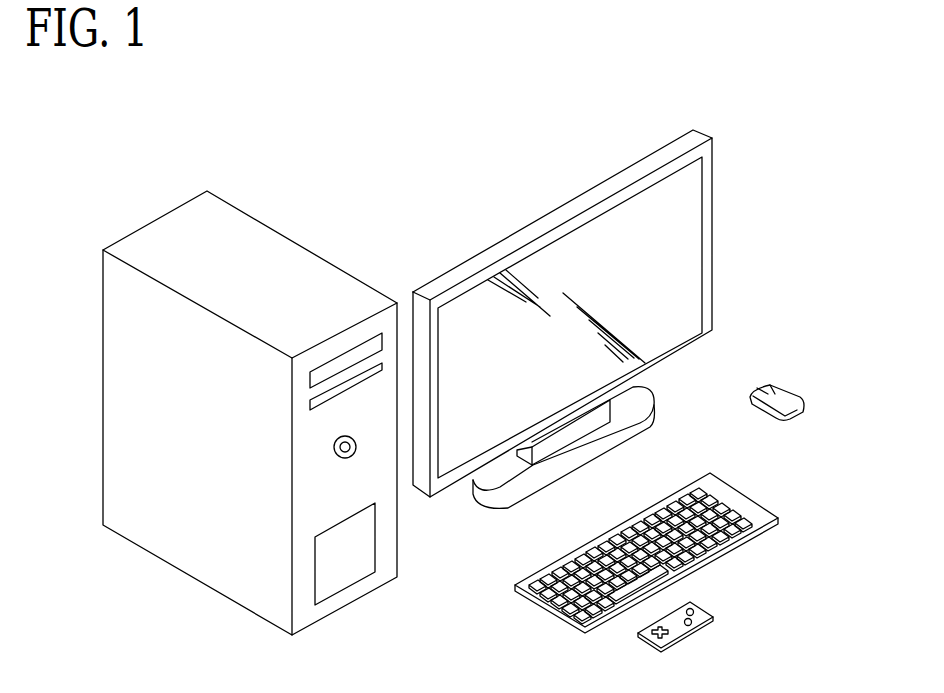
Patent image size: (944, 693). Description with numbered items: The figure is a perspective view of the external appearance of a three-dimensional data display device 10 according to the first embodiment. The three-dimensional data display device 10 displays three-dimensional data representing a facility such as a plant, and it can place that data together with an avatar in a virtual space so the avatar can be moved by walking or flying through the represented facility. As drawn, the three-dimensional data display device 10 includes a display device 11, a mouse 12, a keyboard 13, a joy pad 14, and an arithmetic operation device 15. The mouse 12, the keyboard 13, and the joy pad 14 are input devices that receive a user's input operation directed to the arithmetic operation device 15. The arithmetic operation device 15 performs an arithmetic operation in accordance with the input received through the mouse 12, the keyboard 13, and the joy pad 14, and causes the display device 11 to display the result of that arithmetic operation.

The three-dimensional data display device 10 is at (792, 125).
The display device 11 is at (708, 243).
The mouse 12 is at (797, 397).
The keyboard 13 is at (770, 506).
The joy pad 14 is at (703, 615).
The arithmetic operation device 15 is at (242, 220).